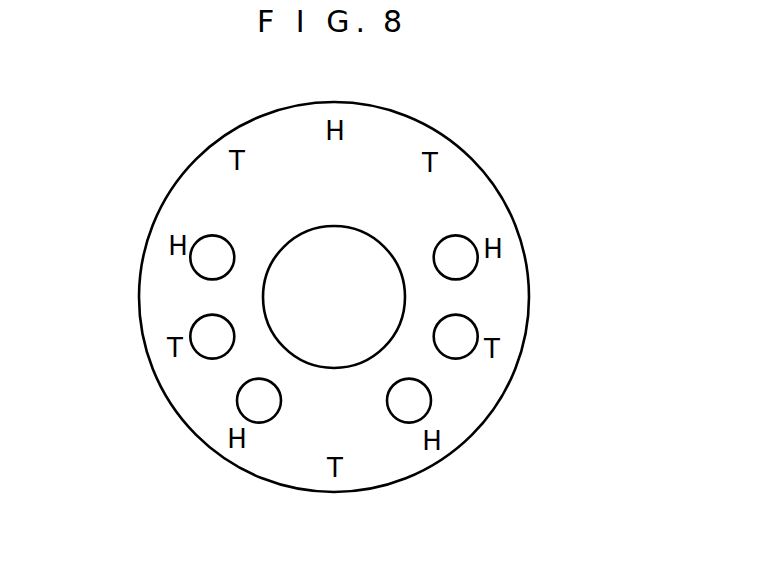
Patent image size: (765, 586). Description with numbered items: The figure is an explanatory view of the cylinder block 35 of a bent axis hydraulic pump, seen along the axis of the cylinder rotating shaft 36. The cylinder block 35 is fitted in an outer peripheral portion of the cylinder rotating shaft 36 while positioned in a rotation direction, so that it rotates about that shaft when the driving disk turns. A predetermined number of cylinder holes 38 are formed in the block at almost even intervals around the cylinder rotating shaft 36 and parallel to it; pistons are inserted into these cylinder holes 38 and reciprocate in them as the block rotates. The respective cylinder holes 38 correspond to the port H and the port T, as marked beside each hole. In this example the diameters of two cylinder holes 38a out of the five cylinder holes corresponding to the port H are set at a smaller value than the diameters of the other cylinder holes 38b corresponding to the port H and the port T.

The cylinder block 35 is at (477, 398).
The cylinder rotating shaft 36 is at (392, 253).
The cylinder holes 38 is at (460, 278).
The cylinder holes 38a is at (200, 248).
The cylinder holes 38b is at (242, 392).